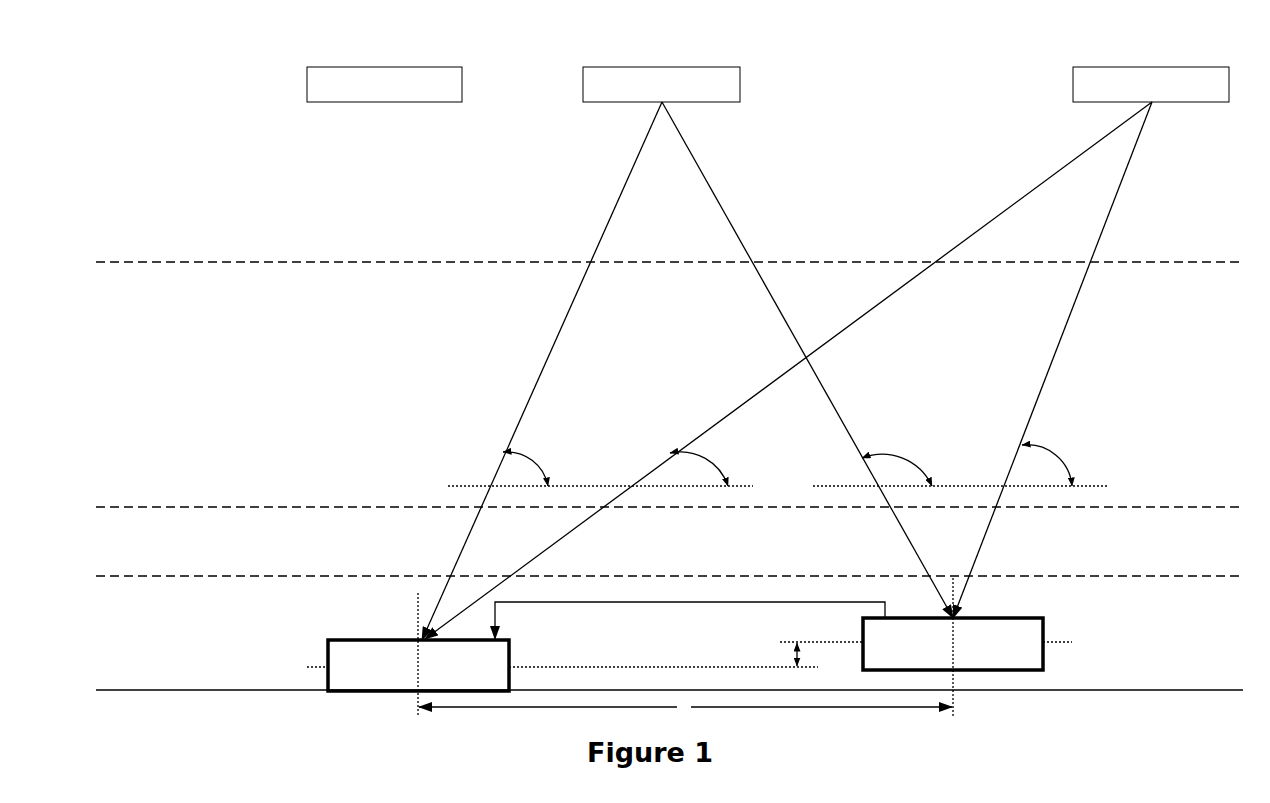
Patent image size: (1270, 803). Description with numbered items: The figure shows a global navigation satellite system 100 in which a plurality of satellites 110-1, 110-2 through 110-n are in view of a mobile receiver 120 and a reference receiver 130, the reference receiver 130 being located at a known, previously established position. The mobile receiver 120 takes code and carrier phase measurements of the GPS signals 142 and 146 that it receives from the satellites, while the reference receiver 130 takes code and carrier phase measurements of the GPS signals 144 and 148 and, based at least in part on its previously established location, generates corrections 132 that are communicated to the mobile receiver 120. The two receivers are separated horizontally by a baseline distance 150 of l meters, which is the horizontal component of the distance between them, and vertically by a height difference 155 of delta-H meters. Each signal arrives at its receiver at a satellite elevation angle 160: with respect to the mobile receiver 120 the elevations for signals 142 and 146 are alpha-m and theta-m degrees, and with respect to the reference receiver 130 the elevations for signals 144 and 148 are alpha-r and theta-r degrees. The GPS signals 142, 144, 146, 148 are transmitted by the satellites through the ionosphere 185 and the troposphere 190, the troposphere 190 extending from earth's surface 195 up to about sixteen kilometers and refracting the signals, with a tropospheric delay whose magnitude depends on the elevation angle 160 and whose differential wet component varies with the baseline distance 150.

The global navigation satellite system 100 is at (228, 96).
The satellite 110-n is at (417, 67).
The satellite 110-1 is at (696, 67).
The satellite 110-2 is at (1163, 67).
The mobile receiver 120 is at (562, 655).
The reference receiver 130 is at (926, 647).
The corrections 132 is at (578, 602).
The GPS signal 142 is at (628, 172).
The GPS signal 144 is at (702, 172).
The GPS signal 146 is at (1057, 170).
The GPS signal 148 is at (1127, 167).
The baseline distance 150 is at (797, 702).
The height difference 155 is at (792, 655).
The satellite elevation angle 160 is at (552, 433).
The ionosphere 185 is at (669, 384).
The troposphere 190 is at (669, 605).
The earth's surface 195 is at (217, 694).